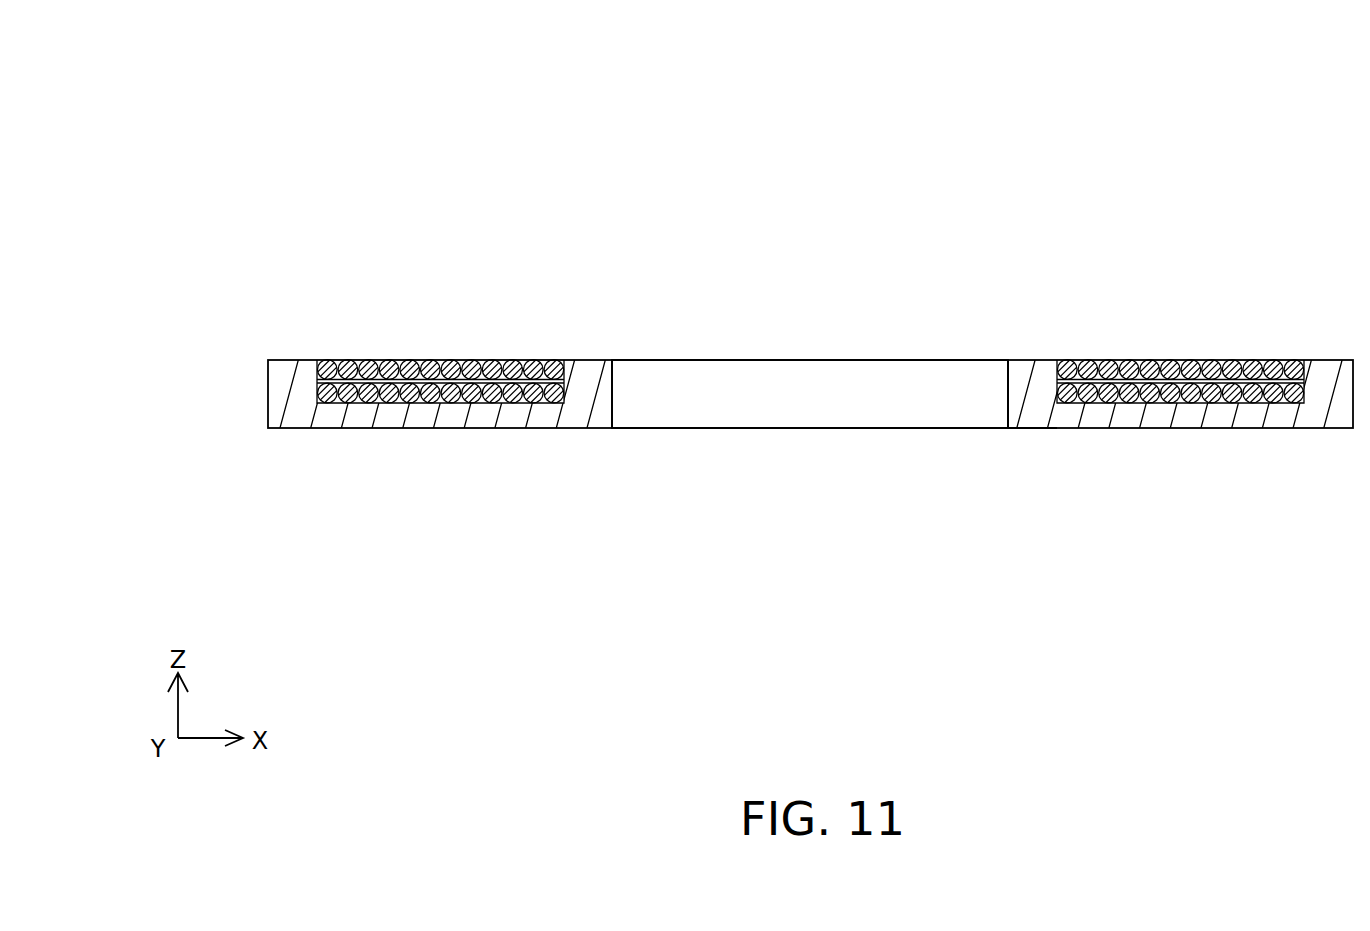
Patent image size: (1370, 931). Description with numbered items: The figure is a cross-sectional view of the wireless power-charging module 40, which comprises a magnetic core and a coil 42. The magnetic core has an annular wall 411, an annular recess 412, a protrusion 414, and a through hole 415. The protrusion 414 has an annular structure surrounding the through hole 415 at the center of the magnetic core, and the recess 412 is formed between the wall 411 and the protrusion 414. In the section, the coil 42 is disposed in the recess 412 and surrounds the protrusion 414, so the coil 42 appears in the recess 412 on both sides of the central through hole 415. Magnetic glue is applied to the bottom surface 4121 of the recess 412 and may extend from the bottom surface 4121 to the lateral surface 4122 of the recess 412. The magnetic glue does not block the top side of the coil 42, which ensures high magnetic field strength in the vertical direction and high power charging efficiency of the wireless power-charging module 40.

The wireless power-charging module 40 is at (252, 61).
The annular wall 411 is at (1322, 380).
The annular recess 412 is at (463, 360).
The bottom surface 4121 is at (451, 400).
The lateral surface 4122 is at (336, 360).
The protrusion 414 is at (1038, 382).
The through hole 415 is at (793, 382).
The coil 42 is at (1177, 382).